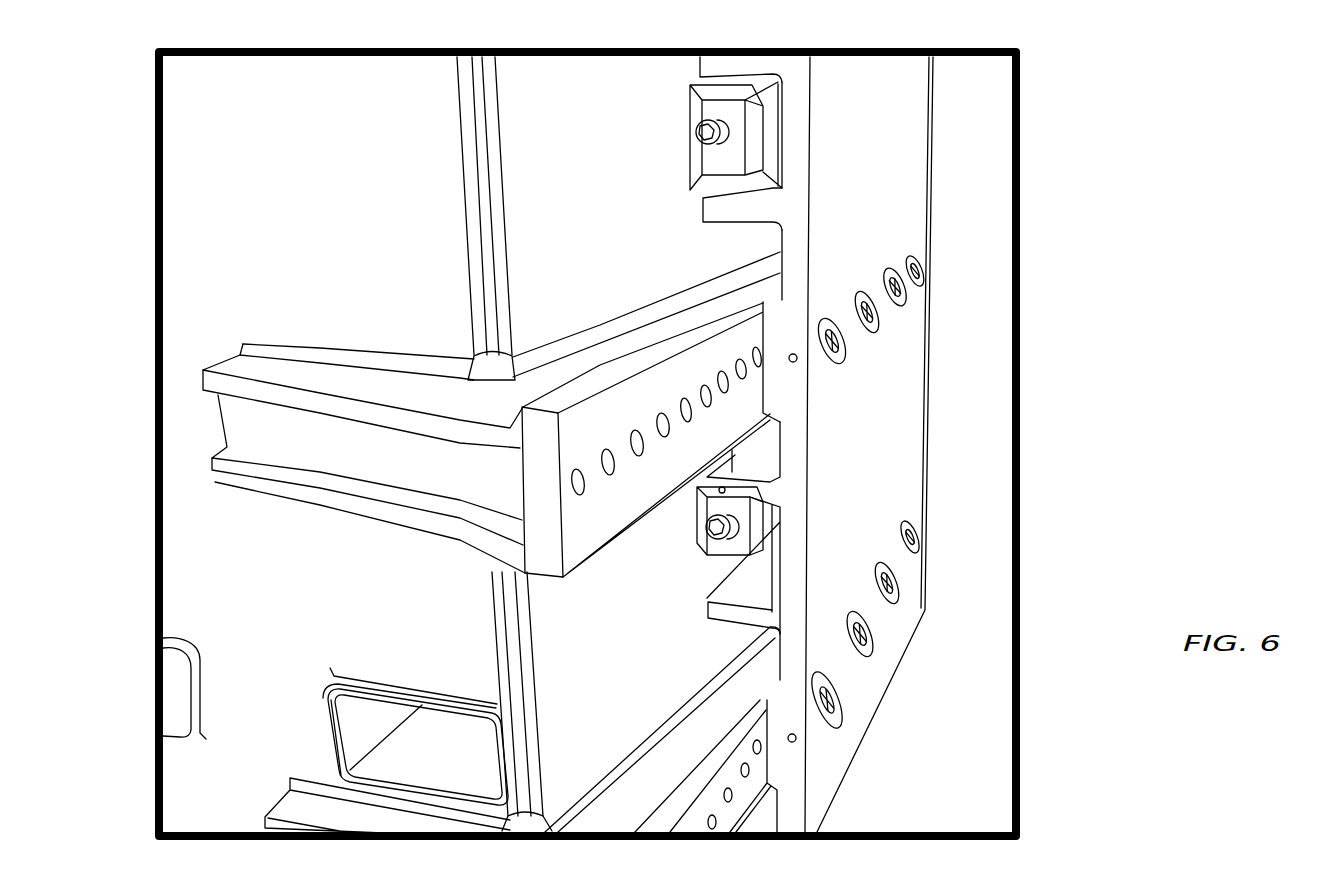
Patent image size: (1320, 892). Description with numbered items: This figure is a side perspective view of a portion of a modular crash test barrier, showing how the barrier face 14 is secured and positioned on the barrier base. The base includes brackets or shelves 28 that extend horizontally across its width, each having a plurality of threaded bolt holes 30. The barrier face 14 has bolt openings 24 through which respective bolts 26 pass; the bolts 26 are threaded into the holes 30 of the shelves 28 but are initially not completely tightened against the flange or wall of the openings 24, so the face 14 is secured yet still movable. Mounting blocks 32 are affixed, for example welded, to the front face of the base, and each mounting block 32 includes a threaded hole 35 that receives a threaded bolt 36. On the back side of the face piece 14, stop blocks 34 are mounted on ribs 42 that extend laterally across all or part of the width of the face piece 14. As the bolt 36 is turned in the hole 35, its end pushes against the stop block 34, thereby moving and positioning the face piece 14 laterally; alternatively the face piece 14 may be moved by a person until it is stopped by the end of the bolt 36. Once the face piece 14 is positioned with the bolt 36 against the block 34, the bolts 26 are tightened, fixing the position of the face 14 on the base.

The barrier face 14 is at (884, 480).
The bolt openings 24 is at (878, 290).
The bolts 26 is at (866, 298).
The shelves 28 is at (450, 486).
The bolt holes 30 is at (582, 474).
The mounting blocks 32 is at (722, 112).
The stop blocks 34 is at (772, 112).
The threaded holes 35 is at (726, 485).
The threaded bolt 36 is at (700, 140).
The ribs 42 is at (745, 62).